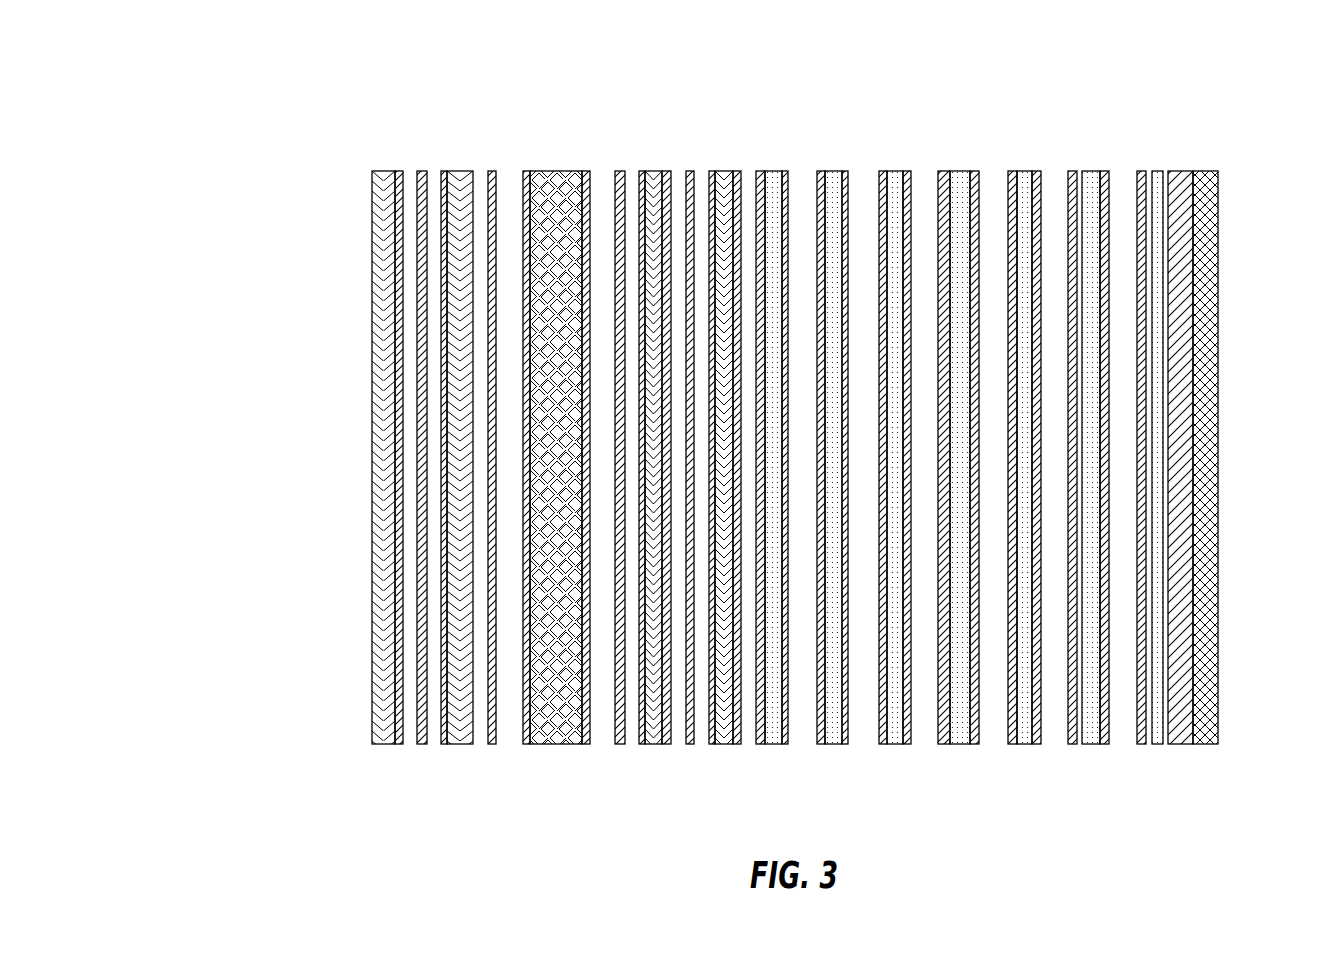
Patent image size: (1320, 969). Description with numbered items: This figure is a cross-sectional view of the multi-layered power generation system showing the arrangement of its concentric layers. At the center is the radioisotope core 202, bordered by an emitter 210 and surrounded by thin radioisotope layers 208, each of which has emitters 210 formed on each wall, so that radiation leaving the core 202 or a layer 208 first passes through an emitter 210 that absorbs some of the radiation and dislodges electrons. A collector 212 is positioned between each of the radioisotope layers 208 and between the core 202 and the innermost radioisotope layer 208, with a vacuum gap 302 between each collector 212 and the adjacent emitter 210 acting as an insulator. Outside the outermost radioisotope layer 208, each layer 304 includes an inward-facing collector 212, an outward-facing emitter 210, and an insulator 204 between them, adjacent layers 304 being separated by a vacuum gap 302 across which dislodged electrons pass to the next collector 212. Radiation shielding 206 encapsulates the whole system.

The radioisotope core 202 is at (552, 725).
The insulator 204 is at (843, 670).
The radiation shielding 206 is at (1187, 725).
The radioisotope layer 208 is at (390, 371).
The emitter 210 is at (712, 347).
The collector 212 is at (818, 635).
The vacuum gap 302 is at (1060, 209).
The layer 304 is at (1089, 753).